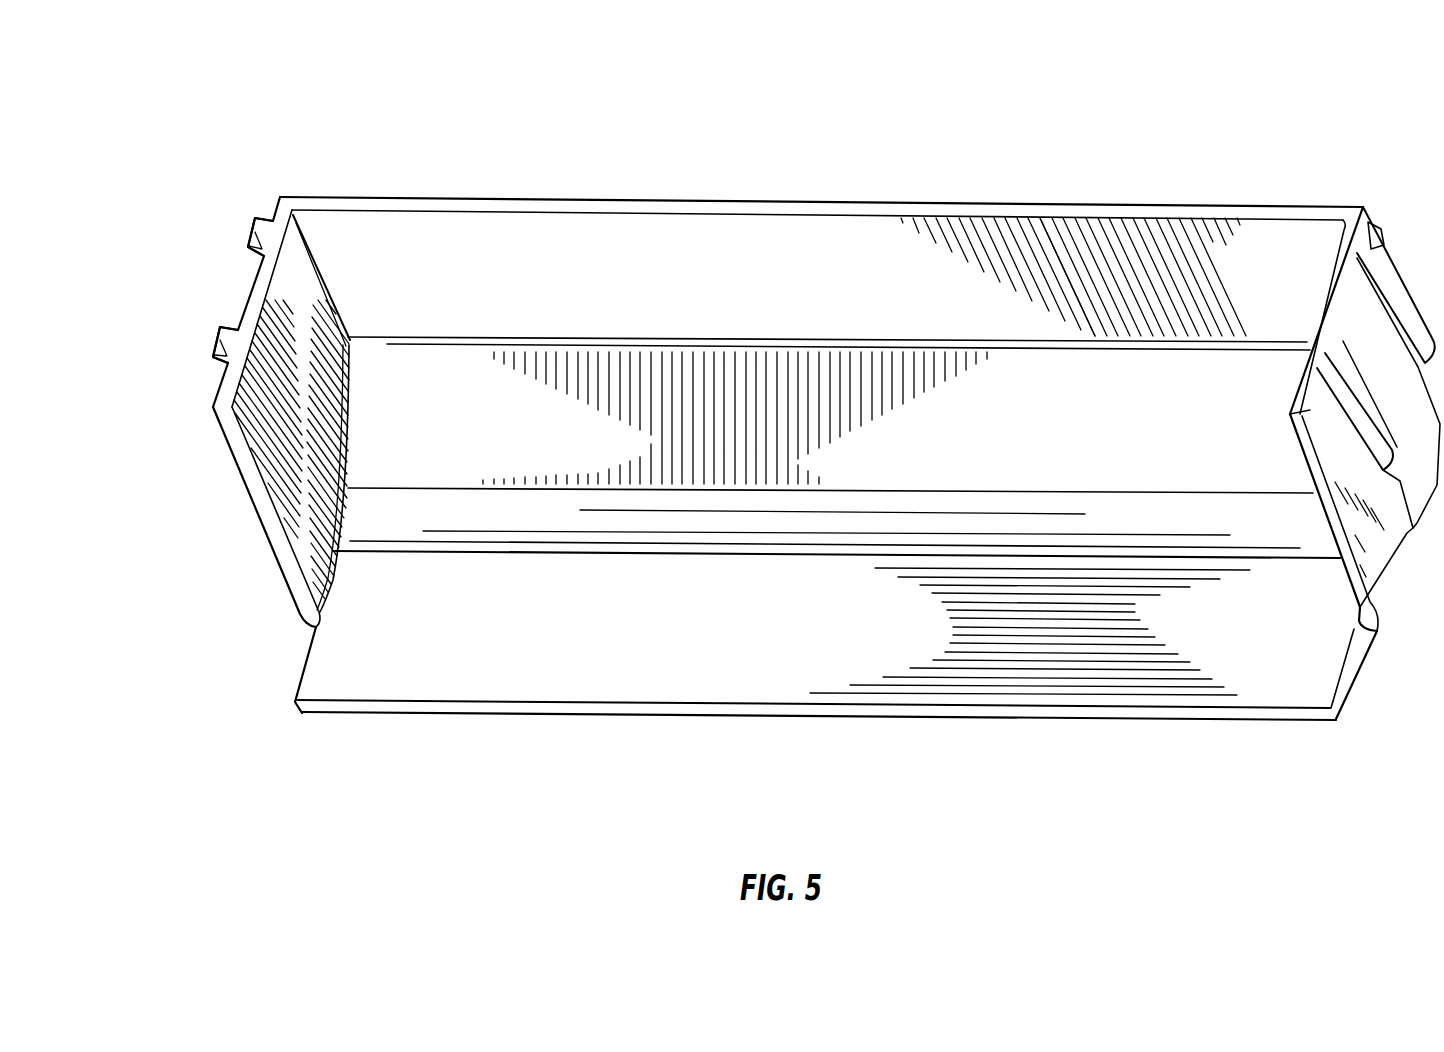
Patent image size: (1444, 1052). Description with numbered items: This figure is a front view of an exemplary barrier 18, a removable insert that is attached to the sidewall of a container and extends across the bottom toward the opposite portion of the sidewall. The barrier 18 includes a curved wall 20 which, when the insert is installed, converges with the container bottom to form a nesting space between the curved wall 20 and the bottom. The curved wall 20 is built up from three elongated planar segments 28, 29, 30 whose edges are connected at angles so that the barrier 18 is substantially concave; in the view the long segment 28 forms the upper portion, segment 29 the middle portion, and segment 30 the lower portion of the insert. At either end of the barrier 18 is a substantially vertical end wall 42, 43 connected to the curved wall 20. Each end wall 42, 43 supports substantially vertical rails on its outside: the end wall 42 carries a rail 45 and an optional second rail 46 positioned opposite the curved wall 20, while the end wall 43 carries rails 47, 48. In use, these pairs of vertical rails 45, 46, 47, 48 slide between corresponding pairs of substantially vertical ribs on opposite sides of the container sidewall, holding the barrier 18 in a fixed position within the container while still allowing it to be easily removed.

The barrier 18 is at (835, 97).
The curved wall 20 is at (1083, 413).
The elongated planar segment 28 is at (568, 252).
The elongated planar segment 29 is at (447, 446).
The elongated planar segment 30 is at (493, 683).
The end wall 42 is at (252, 296).
The end wall 43 is at (1384, 338).
The vertical rail 45 is at (255, 233).
The second vertical rail 46 is at (220, 343).
The vertical rail 47 is at (1383, 238).
The vertical rail 48 is at (1307, 348).